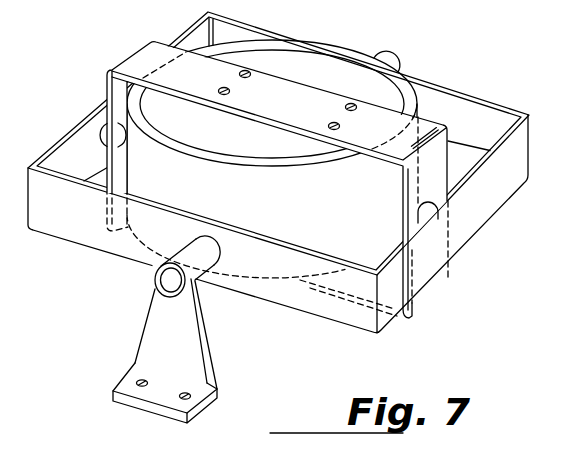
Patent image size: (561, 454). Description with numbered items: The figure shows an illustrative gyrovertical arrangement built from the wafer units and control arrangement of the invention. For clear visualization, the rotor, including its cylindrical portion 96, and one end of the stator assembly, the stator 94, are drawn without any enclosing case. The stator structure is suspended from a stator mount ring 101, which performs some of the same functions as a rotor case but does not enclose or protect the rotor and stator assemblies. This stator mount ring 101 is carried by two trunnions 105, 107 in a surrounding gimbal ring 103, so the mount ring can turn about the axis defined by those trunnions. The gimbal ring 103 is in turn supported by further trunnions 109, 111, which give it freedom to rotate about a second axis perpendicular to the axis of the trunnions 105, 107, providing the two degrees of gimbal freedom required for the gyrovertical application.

The stator 94 is at (312, 70).
The rotor cylinder 96 is at (170, 192).
The stator mount ring 101 is at (143, 53).
The gimbal ring 103 is at (465, 237).
The trunnion 105 is at (120, 137).
The trunnion 107 is at (443, 213).
The trunnion 109 is at (206, 266).
The trunnion 111 is at (387, 60).